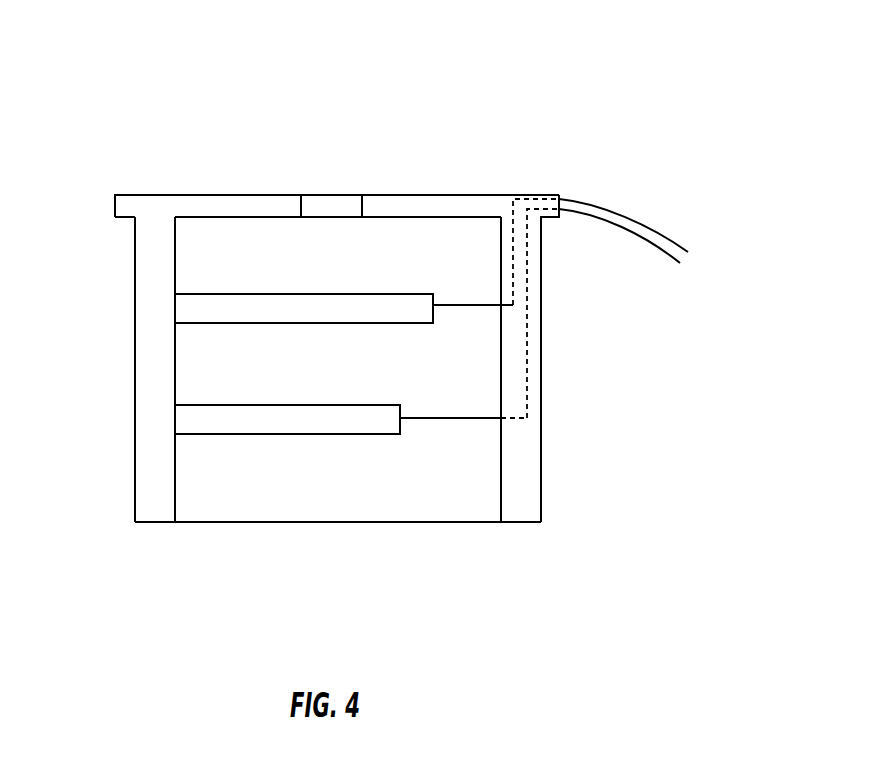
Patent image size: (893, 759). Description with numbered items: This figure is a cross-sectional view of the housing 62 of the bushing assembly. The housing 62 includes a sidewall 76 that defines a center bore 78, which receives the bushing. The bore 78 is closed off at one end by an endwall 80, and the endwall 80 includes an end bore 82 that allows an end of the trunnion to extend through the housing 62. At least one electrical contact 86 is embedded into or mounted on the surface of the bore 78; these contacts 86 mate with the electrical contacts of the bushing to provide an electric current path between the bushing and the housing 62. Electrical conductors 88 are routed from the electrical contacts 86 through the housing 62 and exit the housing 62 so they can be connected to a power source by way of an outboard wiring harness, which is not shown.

The housing 62 is at (528, 66).
The sidewall 76 is at (157, 493).
The center bore 78 is at (279, 530).
The endwall 80 is at (253, 207).
The end bore 82 is at (337, 189).
The electrical contact 86 is at (180, 302).
The electrical conductors 88 is at (633, 217).